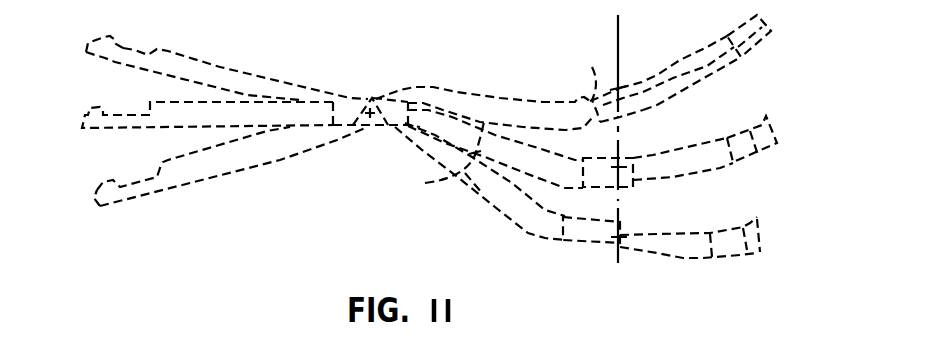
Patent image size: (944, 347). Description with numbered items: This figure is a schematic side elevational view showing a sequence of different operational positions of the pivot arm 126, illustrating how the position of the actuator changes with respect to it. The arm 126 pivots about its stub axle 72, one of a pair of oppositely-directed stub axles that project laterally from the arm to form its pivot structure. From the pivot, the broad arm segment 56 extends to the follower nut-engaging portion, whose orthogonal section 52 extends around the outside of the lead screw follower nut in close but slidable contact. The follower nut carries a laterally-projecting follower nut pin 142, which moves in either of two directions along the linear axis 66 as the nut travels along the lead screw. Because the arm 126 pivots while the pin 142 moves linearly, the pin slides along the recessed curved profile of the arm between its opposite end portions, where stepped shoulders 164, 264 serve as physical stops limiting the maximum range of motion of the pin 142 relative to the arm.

The second orthogonally-disposed integral section 52 is at (772, 18).
The broad arm segment 56 is at (494, 102).
The linear axis 66 is at (619, 47).
The stub axle 72 is at (373, 101).
The arm 126 is at (343, 150).
The follower nut pin 142 is at (630, 76).
The stepped shoulder 164 is at (592, 67).
The stepped shoulder 264 is at (720, 35).